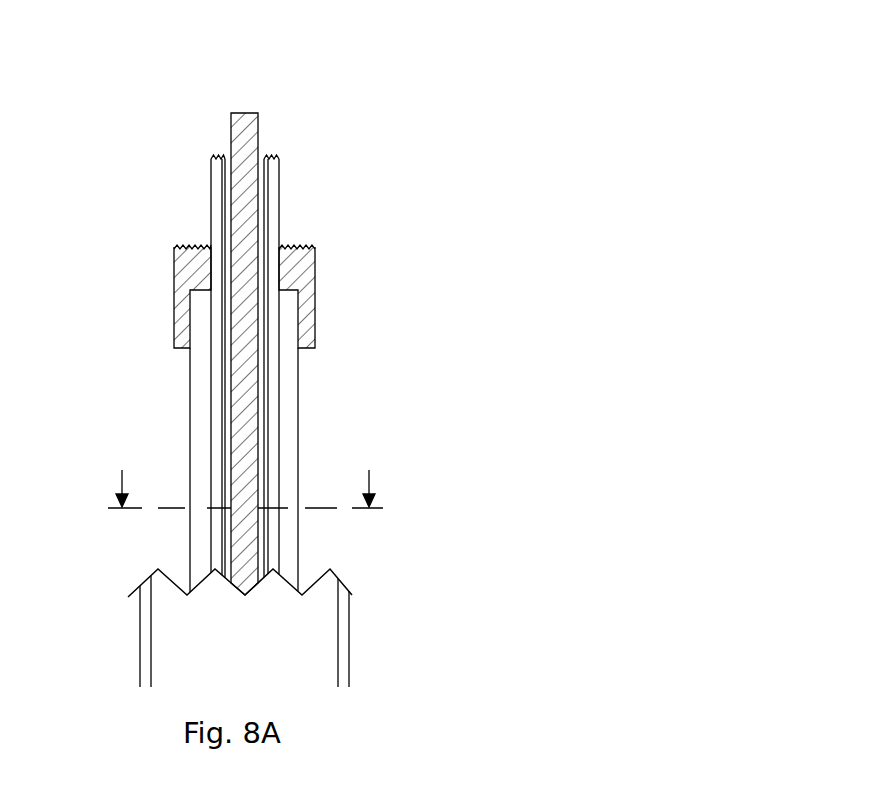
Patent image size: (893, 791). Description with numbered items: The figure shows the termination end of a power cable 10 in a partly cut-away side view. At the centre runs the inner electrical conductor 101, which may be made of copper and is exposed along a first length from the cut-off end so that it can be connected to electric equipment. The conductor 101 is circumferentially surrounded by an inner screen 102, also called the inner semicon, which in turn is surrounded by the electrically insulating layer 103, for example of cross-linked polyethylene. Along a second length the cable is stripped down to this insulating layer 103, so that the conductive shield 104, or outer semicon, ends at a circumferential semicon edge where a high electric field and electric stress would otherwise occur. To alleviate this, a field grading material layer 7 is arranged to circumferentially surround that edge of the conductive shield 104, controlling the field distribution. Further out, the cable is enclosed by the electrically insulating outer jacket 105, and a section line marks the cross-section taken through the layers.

The power cable 10 is at (384, 100).
The field grading material layer 7 is at (312, 291).
The inner electrical conductor 101 is at (243, 372).
The inner screen 102 is at (263, 318).
The electrically insulating layer 103 is at (268, 255).
The conductive shield 104 is at (290, 405).
The electrically insulating outer jacket 105 is at (338, 632).